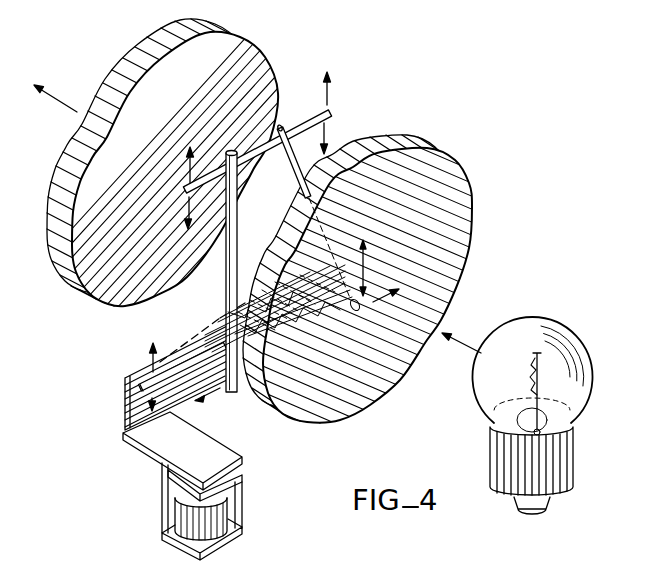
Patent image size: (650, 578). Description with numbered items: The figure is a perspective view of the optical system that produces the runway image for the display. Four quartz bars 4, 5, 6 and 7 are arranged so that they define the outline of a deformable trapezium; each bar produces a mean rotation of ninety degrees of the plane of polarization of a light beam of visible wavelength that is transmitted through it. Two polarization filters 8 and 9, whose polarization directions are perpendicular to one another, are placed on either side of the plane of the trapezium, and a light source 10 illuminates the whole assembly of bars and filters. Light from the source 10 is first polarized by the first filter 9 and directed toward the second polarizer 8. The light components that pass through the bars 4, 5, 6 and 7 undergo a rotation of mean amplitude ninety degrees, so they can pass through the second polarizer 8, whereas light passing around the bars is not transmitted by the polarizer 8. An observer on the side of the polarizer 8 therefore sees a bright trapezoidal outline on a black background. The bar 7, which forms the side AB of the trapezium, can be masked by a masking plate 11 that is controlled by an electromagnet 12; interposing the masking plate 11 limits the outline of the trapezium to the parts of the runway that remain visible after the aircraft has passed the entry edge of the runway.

The quartz bar 4 is at (266, 150).
The quartz bar 5 is at (319, 218).
The quartz bar 6 is at (237, 272).
The quartz bar 7 is at (147, 370).
The polarization filter 8 is at (296, 165).
The polarization filter 9 is at (360, 291).
The light source 10 is at (532, 405).
The masking plate 11 is at (125, 397).
The electromagnet 12 is at (240, 500).